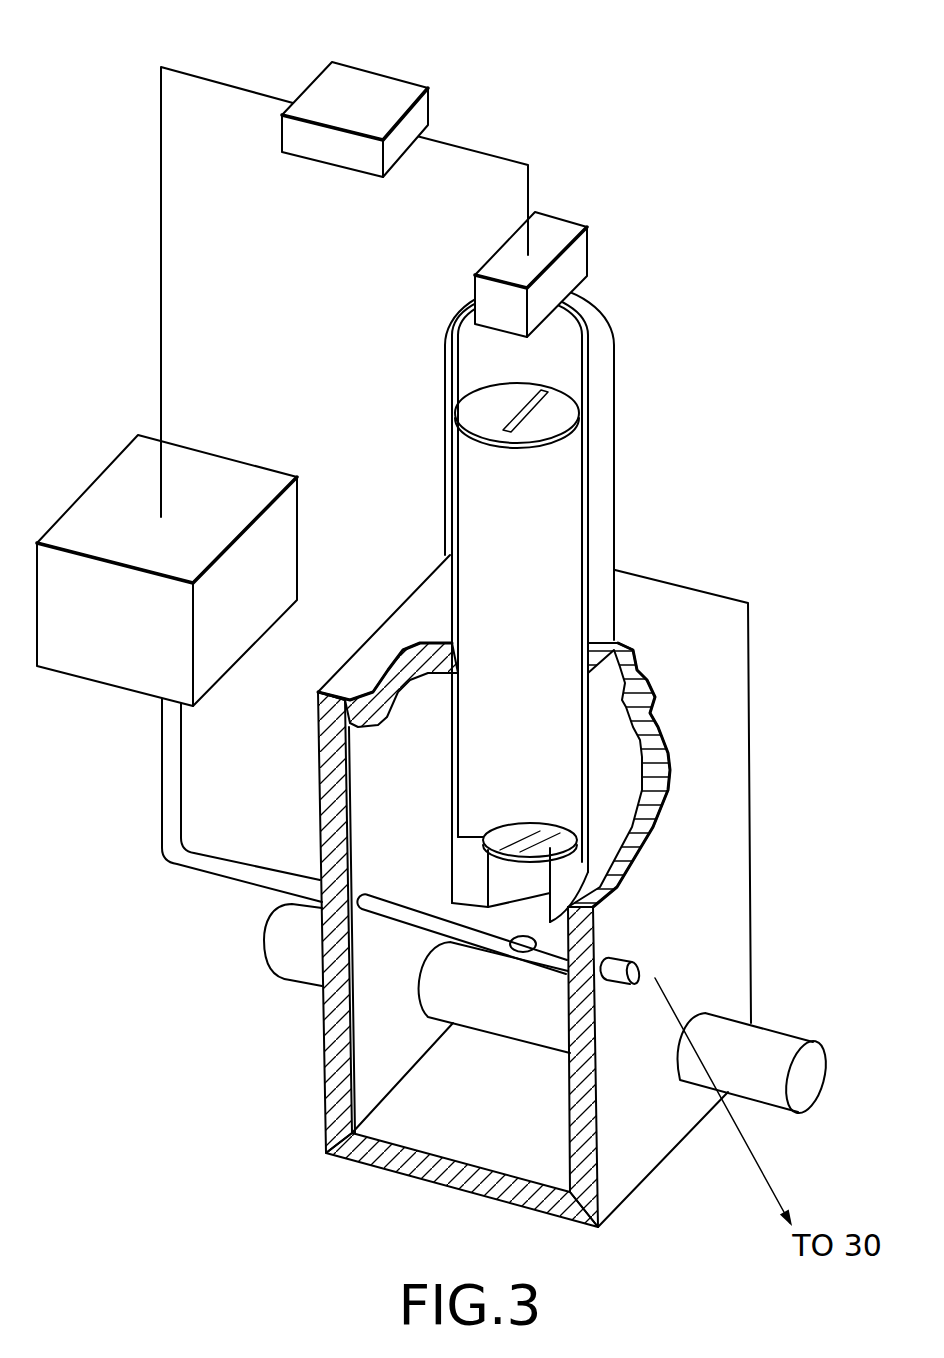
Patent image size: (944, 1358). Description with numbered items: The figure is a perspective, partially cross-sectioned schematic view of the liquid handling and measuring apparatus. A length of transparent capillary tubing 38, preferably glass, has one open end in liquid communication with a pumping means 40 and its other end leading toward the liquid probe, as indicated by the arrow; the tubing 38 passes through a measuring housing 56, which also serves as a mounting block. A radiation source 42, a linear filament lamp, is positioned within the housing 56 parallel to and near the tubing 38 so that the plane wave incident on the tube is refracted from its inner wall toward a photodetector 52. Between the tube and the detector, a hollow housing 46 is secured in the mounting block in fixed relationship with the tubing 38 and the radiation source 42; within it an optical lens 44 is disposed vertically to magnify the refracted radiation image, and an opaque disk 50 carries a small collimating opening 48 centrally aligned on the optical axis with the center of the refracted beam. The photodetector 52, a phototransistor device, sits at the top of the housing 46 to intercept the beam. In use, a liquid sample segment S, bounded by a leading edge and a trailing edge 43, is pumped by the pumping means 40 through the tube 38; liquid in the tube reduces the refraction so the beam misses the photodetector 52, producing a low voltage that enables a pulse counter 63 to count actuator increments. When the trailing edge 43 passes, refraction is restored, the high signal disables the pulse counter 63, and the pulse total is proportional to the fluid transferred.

The tubing 38 is at (588, 98).
The pumping means 40 is at (207, 465).
The radiation source 42 is at (775, 1045).
The trailing edge 43 is at (513, 935).
The optical lens 44 is at (538, 832).
The housing 46 is at (572, 890).
The collimating opening 48 is at (530, 410).
The disk 50 is at (480, 416).
The photodetector 52 is at (557, 230).
The measuring housing 56 is at (665, 578).
The pulse counter 63 is at (382, 93).
The liquid sample segment S is at (513, 947).